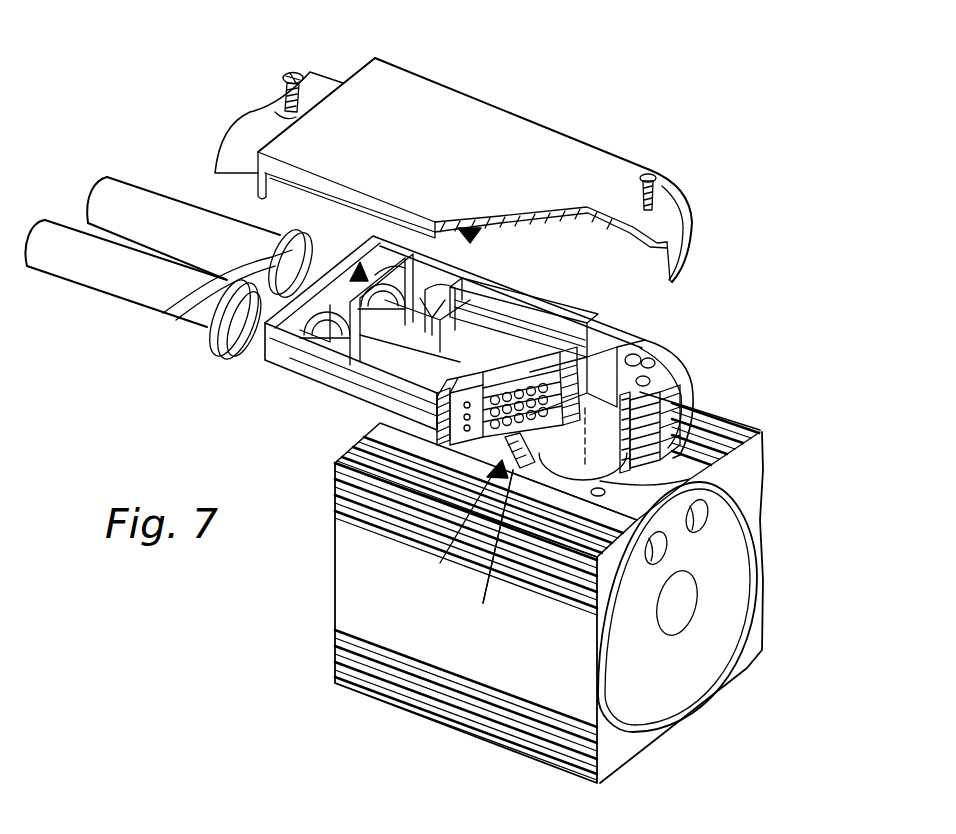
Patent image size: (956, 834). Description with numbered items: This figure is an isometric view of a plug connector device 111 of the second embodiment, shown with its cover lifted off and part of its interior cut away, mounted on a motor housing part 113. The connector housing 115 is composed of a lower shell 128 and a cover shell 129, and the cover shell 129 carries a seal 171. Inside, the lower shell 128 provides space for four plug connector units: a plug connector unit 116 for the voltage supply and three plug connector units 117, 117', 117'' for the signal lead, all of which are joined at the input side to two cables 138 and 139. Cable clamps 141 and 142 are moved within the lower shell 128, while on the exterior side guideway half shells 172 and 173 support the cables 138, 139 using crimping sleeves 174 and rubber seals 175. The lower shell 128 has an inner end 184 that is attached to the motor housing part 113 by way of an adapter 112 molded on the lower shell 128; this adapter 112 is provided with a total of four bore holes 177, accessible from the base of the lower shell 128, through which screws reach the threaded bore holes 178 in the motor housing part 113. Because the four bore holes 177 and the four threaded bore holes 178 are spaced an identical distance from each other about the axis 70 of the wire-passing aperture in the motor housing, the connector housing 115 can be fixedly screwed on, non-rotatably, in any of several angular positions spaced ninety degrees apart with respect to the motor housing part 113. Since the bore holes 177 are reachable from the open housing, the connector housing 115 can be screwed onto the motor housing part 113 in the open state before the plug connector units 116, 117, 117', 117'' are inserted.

The axis 70 is at (768, 454).
The plug connector device 111 is at (732, 288).
The adapter 112 is at (440, 563).
The motor housing part 113 is at (773, 602).
The connector housing 115 is at (703, 200).
The plug connector unit 116 is at (602, 335).
The plug connector unit 117 is at (448, 407).
The plug connector unit 117' is at (395, 408).
The plug connector unit 117'' is at (525, 310).
The lower shell 128 is at (303, 378).
The cover shell 129 is at (532, 138).
The cable 138 is at (116, 192).
The cable 139 is at (45, 267).
The cable clamp 141 is at (354, 268).
The cable clamp 142 is at (360, 330).
The seal 171 is at (484, 240).
The guideway half shell 172 is at (240, 130).
The guideway half shell 173 is at (310, 72).
The crimping sleeve 174 is at (240, 330).
The rubber seal 175 is at (207, 338).
The bore hole 177 is at (482, 554).
The threaded bore hole 178 is at (484, 606).
The inner end 184 is at (677, 420).